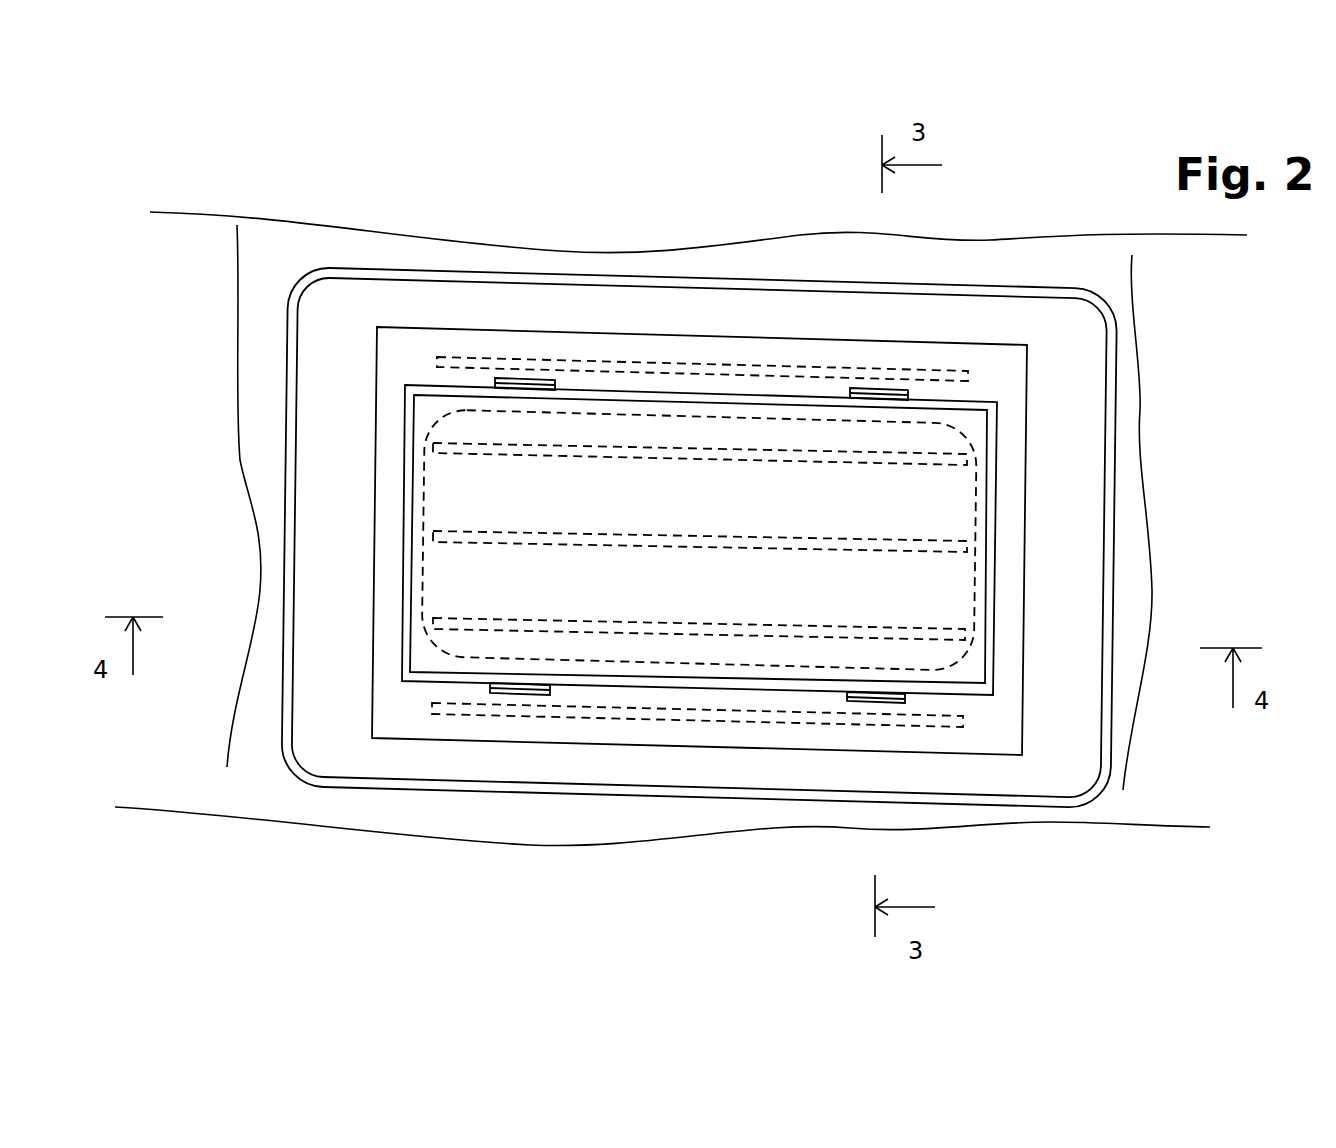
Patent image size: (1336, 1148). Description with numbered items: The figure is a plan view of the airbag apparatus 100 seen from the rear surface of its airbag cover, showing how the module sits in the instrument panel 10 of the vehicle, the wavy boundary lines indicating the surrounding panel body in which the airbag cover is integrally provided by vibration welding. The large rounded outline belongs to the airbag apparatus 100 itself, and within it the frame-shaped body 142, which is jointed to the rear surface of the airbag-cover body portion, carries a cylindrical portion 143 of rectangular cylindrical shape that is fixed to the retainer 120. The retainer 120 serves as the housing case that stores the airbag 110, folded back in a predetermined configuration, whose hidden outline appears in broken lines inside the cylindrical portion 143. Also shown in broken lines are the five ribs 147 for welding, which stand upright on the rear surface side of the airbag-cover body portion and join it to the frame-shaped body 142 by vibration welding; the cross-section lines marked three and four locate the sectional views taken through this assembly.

The instrument panel 10 is at (1027, 260).
The airbag apparatus 100 is at (541, 165).
The airbag 110 is at (977, 538).
The retainer 120 is at (973, 428).
The frame-shaped body 142 is at (1040, 584).
The cylindrical portion 143 is at (997, 470).
The ribs for welding 147 is at (432, 706).